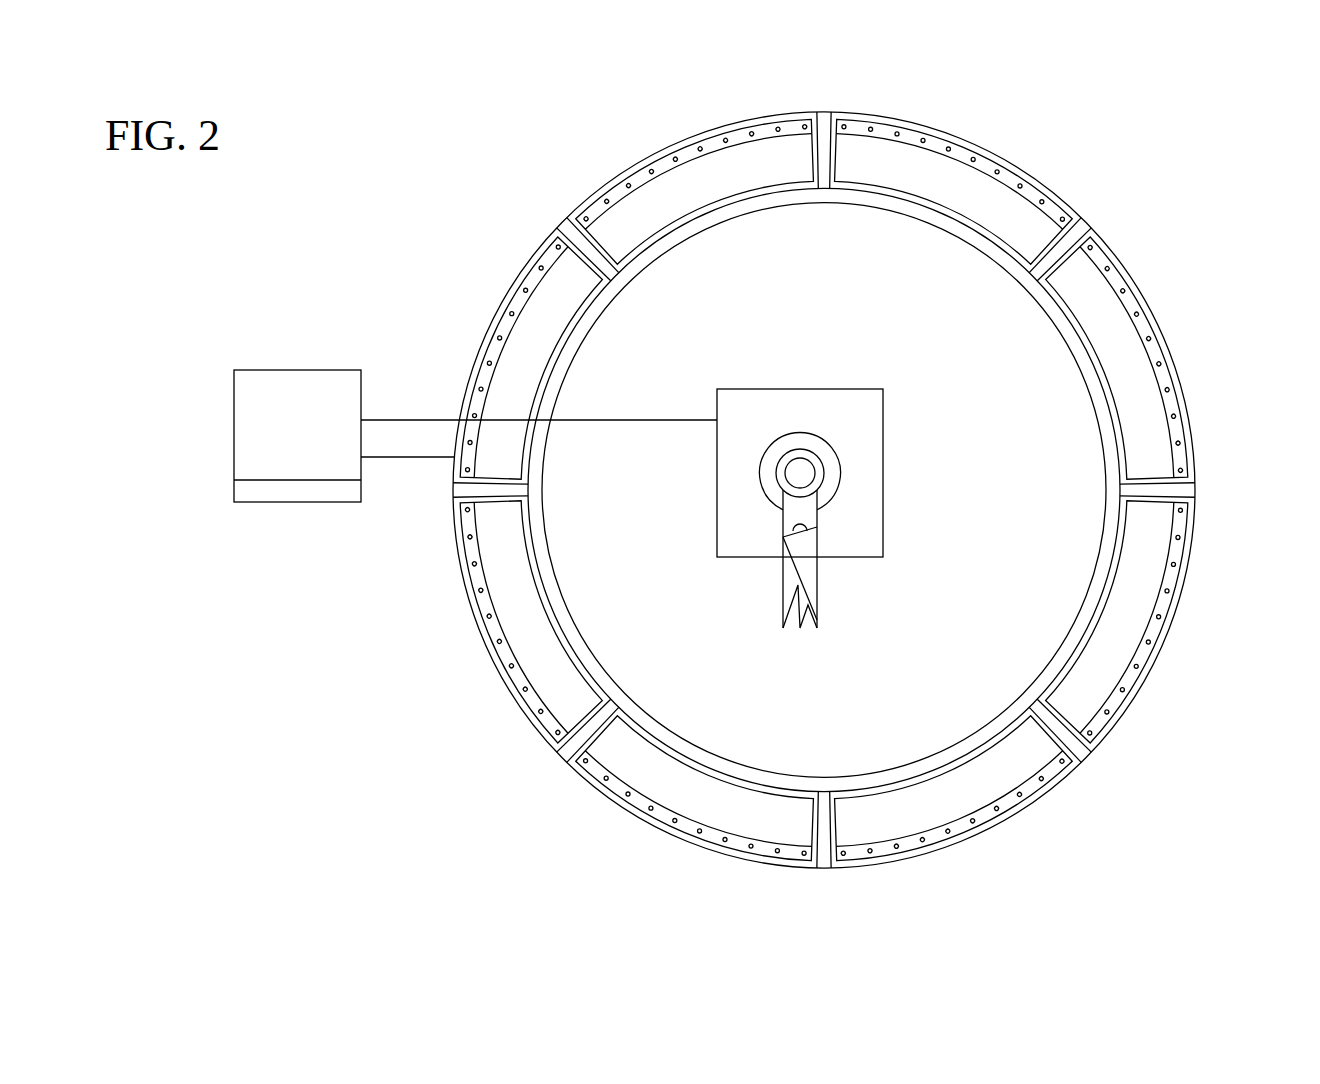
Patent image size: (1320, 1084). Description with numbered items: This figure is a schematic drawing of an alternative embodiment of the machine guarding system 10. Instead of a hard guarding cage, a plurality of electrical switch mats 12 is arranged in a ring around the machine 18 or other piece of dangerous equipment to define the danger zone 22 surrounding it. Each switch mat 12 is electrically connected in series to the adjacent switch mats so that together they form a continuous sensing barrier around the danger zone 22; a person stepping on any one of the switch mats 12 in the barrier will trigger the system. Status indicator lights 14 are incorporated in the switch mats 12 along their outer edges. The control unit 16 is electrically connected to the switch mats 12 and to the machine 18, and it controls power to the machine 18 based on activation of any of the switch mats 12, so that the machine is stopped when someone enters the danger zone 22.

The machine guarding system 10 is at (333, 292).
The switch mat 12 is at (1155, 513).
The status indicator lights 14 is at (1153, 352).
The control unit 16 is at (234, 393).
The machine 18 is at (885, 485).
The danger zone 22 is at (737, 243).